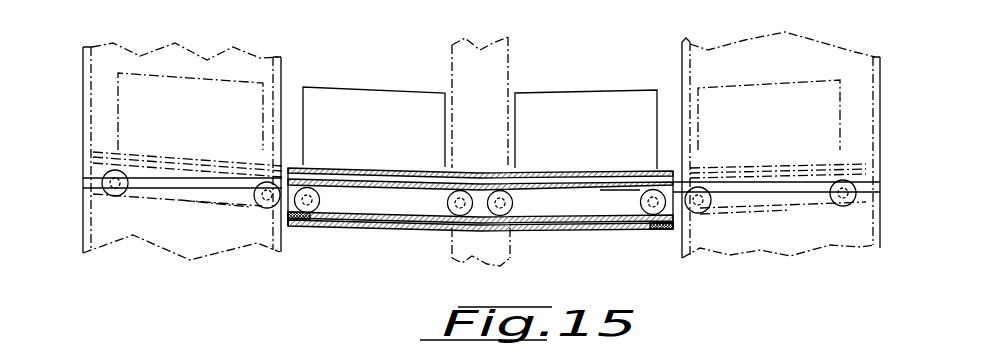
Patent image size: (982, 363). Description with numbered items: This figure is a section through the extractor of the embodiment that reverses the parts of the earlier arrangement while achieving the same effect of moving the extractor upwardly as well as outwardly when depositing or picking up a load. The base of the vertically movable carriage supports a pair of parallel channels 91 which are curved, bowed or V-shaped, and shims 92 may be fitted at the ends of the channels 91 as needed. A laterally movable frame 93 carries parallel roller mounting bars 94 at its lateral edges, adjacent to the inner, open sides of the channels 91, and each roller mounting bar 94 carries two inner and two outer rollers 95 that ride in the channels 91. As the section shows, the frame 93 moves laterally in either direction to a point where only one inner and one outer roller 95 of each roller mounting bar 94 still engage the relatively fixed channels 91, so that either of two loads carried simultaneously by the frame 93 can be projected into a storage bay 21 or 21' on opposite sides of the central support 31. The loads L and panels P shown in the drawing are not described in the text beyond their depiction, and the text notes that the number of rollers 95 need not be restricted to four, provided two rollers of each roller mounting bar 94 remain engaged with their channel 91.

The storage bay 21 is at (182, 140).
The storage bay 21' is at (781, 133).
The center post 31 is at (510, 49).
The channel 91 is at (615, 215).
The shim 92 is at (650, 225).
The laterally movable frame 93 is at (735, 165).
The roller mounting bar 94 is at (772, 210).
The roller 95 is at (832, 200).
The panel L is at (778, 85).
The panel P is at (785, 165).